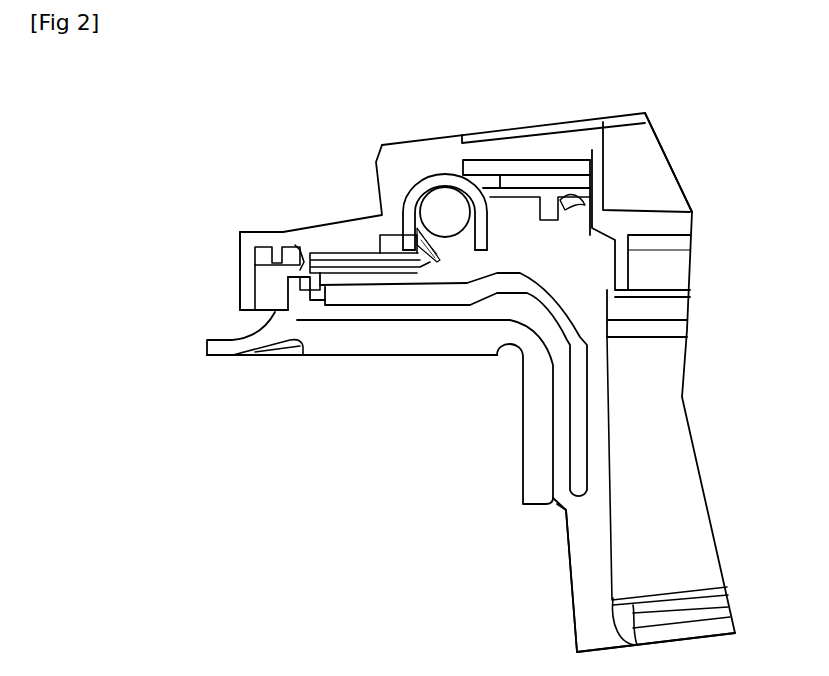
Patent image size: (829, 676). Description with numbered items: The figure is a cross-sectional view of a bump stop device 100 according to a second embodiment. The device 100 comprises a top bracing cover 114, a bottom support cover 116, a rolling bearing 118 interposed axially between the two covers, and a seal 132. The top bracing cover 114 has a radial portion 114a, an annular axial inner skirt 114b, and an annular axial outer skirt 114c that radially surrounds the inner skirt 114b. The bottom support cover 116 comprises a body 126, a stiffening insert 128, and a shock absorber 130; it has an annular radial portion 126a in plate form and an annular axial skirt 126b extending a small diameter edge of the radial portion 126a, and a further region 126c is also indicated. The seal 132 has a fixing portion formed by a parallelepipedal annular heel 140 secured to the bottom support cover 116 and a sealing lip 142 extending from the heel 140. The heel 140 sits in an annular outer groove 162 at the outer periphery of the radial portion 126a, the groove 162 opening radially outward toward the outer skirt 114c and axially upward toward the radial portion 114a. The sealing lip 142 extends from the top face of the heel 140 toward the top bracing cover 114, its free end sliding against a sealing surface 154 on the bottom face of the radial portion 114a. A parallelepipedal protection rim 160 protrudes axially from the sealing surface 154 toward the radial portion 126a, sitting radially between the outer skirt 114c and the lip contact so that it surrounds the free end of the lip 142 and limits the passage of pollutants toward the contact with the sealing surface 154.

The bump stop device 100 is at (708, 188).
The top bracing cover 114 is at (656, 139).
The radial portion 114a is at (521, 150).
The annular axial inner skirt 114b is at (612, 192).
The annular axial outer skirt 114c is at (238, 302).
The bottom support cover 116 is at (571, 581).
The rolling bearing 118 is at (447, 215).
The body 126 is at (567, 591).
The annular radial portion 126a is at (427, 322).
The annular axial skirt 126b is at (578, 543).
The inner block of handle body 126c is at (613, 268).
The stiffening insert 128 is at (572, 483).
The shock absorber 130 is at (373, 362).
The seal 132 is at (313, 258).
The annular heel 140 is at (255, 288).
The sealing lip 142 is at (298, 247).
The sealing surface 154 is at (295, 226).
The protection rim 160 is at (250, 252).
The annular outer groove 162 is at (295, 347).